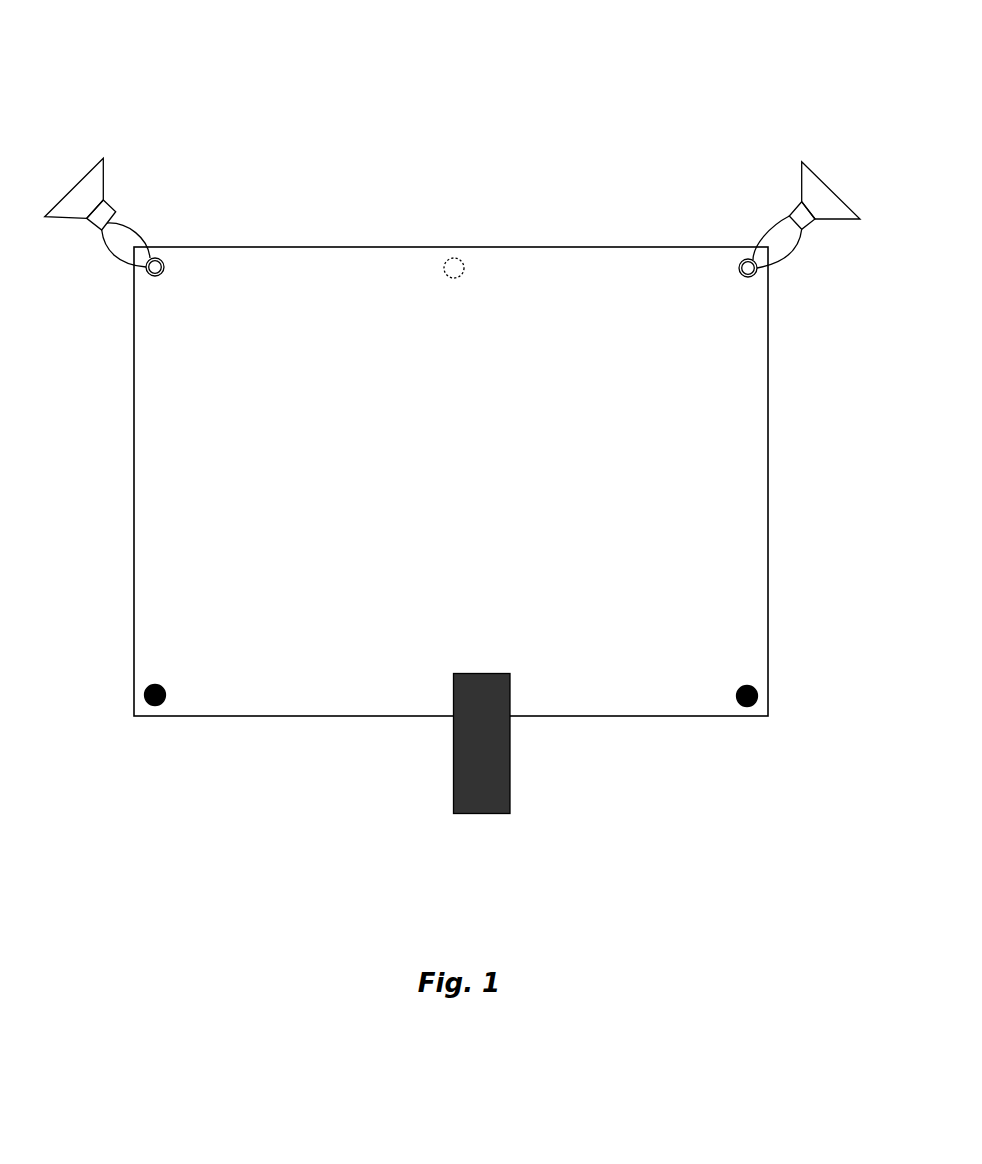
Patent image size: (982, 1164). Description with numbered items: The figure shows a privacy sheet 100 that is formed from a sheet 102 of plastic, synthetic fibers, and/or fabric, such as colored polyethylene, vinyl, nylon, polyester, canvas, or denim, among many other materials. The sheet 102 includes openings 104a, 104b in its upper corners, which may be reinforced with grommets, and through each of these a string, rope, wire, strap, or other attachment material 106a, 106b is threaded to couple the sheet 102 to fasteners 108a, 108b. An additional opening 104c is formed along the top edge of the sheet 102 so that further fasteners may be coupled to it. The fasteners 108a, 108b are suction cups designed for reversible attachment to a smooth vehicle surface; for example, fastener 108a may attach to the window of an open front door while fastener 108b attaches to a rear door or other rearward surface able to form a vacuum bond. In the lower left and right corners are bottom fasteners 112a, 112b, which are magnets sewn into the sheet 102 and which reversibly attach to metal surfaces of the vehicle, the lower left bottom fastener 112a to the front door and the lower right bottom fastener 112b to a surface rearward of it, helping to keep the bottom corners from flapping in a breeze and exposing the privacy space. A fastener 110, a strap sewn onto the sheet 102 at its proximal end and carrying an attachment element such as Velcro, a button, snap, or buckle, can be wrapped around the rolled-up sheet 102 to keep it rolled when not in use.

The privacy sheet 100 is at (289, 42).
The sheet 102 is at (755, 503).
The opening 104a is at (157, 266).
The opening 104b is at (755, 273).
The additional opening 104c is at (458, 258).
The attachment material 106a is at (136, 228).
The attachment material 106b is at (792, 250).
The fastener 108a is at (104, 180).
The fastener 108b is at (801, 193).
The fastener 110 is at (510, 757).
The bottom fastener 112a is at (165, 698).
The bottom fastener 112b is at (758, 688).